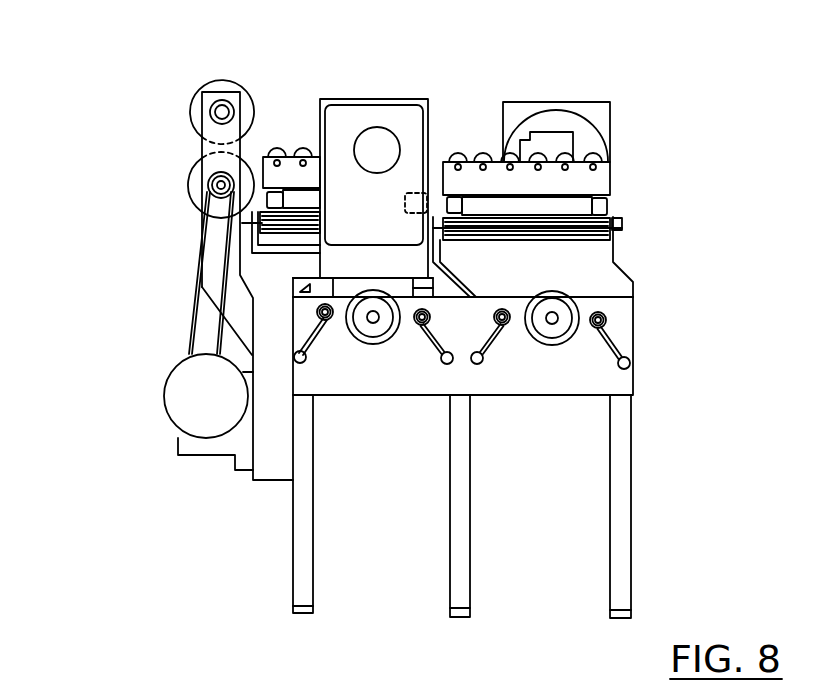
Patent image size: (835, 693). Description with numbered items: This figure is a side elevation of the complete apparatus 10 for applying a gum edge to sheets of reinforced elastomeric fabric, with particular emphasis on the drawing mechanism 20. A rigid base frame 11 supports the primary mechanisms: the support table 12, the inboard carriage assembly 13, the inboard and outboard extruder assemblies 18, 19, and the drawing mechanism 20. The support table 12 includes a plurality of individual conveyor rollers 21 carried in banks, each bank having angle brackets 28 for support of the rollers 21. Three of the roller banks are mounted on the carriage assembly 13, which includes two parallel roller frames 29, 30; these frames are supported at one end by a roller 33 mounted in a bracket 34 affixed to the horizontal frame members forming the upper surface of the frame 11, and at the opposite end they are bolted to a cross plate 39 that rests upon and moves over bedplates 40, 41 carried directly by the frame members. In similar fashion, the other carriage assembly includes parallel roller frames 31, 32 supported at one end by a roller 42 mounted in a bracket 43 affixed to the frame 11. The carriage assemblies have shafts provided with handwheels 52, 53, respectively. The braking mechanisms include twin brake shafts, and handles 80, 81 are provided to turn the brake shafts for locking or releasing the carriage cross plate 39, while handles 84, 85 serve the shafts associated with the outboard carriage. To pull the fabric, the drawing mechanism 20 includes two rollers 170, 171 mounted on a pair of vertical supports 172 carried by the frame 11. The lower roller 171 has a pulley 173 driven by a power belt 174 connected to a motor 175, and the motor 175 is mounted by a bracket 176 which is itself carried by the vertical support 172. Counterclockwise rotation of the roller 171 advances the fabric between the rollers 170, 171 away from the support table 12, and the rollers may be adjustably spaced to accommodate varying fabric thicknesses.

The apparatus 10 is at (627, 62).
The base frame 11 is at (637, 497).
The support table 12 is at (563, 163).
The inboard carriage assembly 13 is at (233, 246).
The inboard extruder assembly 18 is at (374, 148).
The outboard extruder assembly 19 is at (620, 115).
The drawing mechanism 20 is at (166, 265).
The conveyor rollers 21 is at (303, 152).
The angle brackets 28 is at (307, 175).
The roller frame 29 is at (265, 198).
The roller frame 30 is at (405, 208).
The roller frame 31 is at (462, 205).
The roller frame 32 is at (610, 205).
The roller 33 is at (263, 232).
The bracket 34 is at (295, 248).
The cross plate 39 is at (300, 278).
The bedplate 40 is at (307, 296).
The bedplate 41 is at (436, 296).
The roller 42 is at (527, 234).
The bracket 43 is at (437, 250).
The handwheel 52 is at (362, 338).
The handwheel 53 is at (547, 339).
The handle 80 is at (302, 363).
The handle 81 is at (445, 364).
The handle 84 is at (480, 364).
The handle 85 is at (630, 367).
The roller 170 is at (222, 80).
The lower roller 171 is at (197, 175).
The vertical supports 172 is at (213, 283).
The pulley 173 is at (218, 186).
The power belt 174 is at (193, 318).
The motor 175 is at (190, 415).
The bracket 176 is at (207, 447).